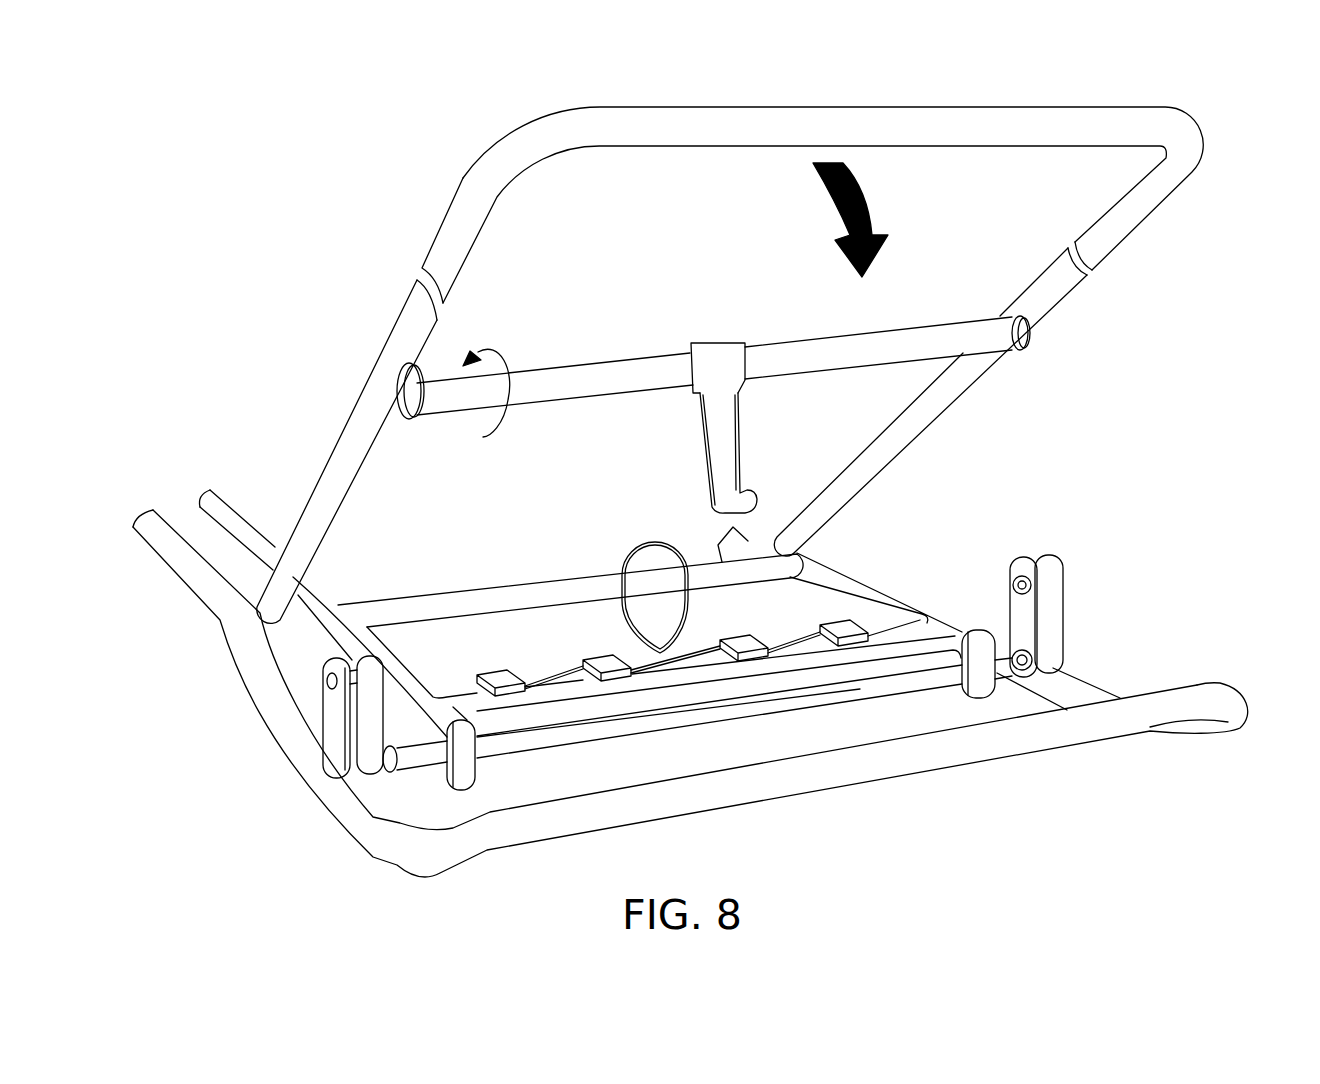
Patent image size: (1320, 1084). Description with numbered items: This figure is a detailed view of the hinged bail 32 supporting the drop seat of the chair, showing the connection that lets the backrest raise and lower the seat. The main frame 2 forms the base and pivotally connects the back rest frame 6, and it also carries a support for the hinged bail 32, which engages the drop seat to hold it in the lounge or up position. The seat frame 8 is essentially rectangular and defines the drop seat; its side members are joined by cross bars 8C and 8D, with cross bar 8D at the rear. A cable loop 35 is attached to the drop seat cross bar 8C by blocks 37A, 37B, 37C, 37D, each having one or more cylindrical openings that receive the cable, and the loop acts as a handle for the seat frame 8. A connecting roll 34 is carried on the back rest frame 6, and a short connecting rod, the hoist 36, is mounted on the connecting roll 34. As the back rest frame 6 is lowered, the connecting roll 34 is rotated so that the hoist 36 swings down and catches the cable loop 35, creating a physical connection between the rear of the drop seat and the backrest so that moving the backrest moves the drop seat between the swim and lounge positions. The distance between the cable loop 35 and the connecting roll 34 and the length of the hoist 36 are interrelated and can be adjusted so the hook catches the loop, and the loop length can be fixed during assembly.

The main frame 2 is at (1195, 697).
The back rest frame 6 is at (1178, 168).
The seat frame 8 is at (870, 597).
The cross bar 8C is at (677, 673).
The cross bar 8D is at (584, 575).
The hinged bail 32 is at (547, 737).
The connecting roll 34 is at (600, 380).
The cable loop 35 is at (652, 538).
The hoist 36 is at (723, 408).
The block 37A is at (497, 672).
The block 37B is at (603, 655).
The block 37C is at (744, 638).
The block 37D is at (855, 628).